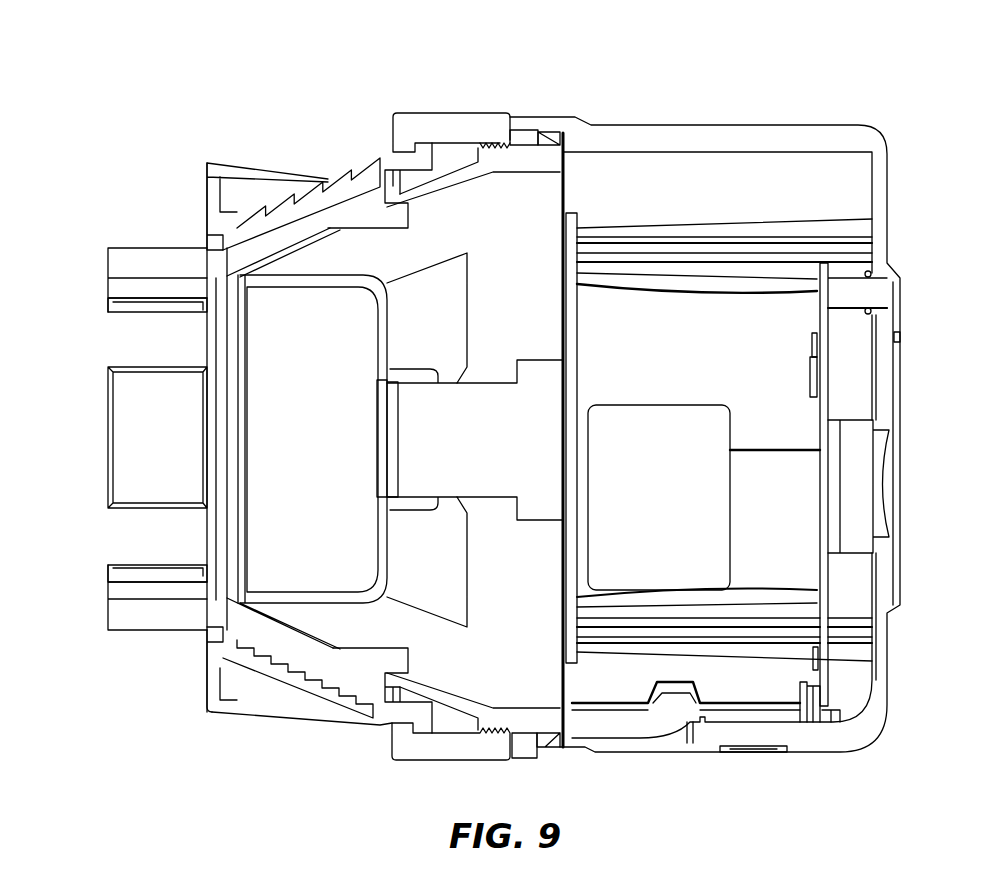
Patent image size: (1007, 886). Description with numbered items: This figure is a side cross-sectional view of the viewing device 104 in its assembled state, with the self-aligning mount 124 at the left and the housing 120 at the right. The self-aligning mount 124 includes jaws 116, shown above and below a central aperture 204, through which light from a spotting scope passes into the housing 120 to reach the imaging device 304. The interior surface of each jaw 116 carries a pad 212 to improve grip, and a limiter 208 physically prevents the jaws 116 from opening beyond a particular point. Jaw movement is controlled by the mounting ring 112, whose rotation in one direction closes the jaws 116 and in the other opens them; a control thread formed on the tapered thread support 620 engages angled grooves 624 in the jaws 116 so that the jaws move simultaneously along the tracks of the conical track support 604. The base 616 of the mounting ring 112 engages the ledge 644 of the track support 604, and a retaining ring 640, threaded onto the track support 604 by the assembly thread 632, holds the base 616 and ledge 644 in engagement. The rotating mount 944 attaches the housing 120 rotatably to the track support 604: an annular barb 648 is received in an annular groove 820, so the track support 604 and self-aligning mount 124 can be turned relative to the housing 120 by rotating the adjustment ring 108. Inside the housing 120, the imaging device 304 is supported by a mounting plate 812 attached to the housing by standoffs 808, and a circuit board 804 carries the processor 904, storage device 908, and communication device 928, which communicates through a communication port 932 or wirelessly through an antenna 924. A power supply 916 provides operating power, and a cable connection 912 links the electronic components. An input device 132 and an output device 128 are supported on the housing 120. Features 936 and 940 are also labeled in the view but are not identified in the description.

The viewing device 104 is at (330, 52).
The adjustment ring 108 is at (455, 765).
The mounting ring 112 is at (300, 722).
The jaws 116 is at (183, 248).
The housing 120 is at (715, 125).
The self-aligning mount 124 is at (352, 765).
The output device 128 is at (900, 337).
The input device 132 is at (887, 450).
The aperture 204 is at (90, 452).
The limiter 208 is at (207, 668).
The pad 212 is at (120, 300).
The imaging device 304 is at (384, 445).
The track support 604 is at (445, 680).
The base 616 is at (423, 140).
The thread support 620 is at (210, 190).
The grooves 624 is at (320, 185).
The assembly thread 632 is at (486, 170).
The retaining ring 640 is at (390, 135).
The ledge 644 is at (440, 172).
The barb 648 is at (555, 140).
The circuit board 804 is at (828, 378).
The standoffs 808 is at (760, 218).
The mounting plate 812 is at (590, 287).
The groove 820 is at (548, 133).
The processor 904 is at (808, 372).
The storage device 908 is at (812, 350).
The cable connection 912 is at (800, 452).
The power supply 916 is at (690, 405).
The antenna 924 is at (640, 705).
The communication device 928 is at (815, 645).
The communication port 932 is at (800, 688).
The curved member 936 is at (730, 292).
The tab 940 is at (800, 752).
The rotating mount 944 is at (537, 98).